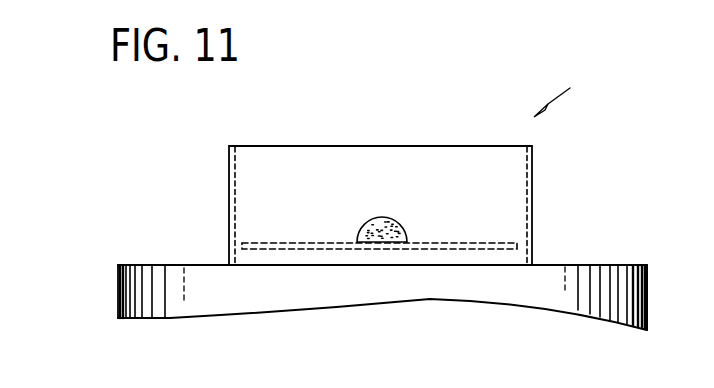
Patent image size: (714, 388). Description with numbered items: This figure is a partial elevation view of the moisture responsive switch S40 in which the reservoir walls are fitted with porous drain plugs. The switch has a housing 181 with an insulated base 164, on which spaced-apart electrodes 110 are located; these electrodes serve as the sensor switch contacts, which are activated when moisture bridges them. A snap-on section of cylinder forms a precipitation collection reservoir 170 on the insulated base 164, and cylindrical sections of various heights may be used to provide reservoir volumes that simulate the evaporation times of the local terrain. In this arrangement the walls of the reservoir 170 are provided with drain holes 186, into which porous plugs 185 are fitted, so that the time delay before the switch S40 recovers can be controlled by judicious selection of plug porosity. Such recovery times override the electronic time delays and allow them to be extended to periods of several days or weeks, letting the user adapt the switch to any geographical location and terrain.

The spaced-apart electrodes 110 is at (318, 249).
The insulated base 164 is at (425, 254).
The reservoir 170 is at (533, 171).
The housing 181 is at (647, 281).
The porous plugs 185 is at (370, 232).
The drain holes 186 is at (236, 219).
The moisture responsive switch S40 is at (565, 96).